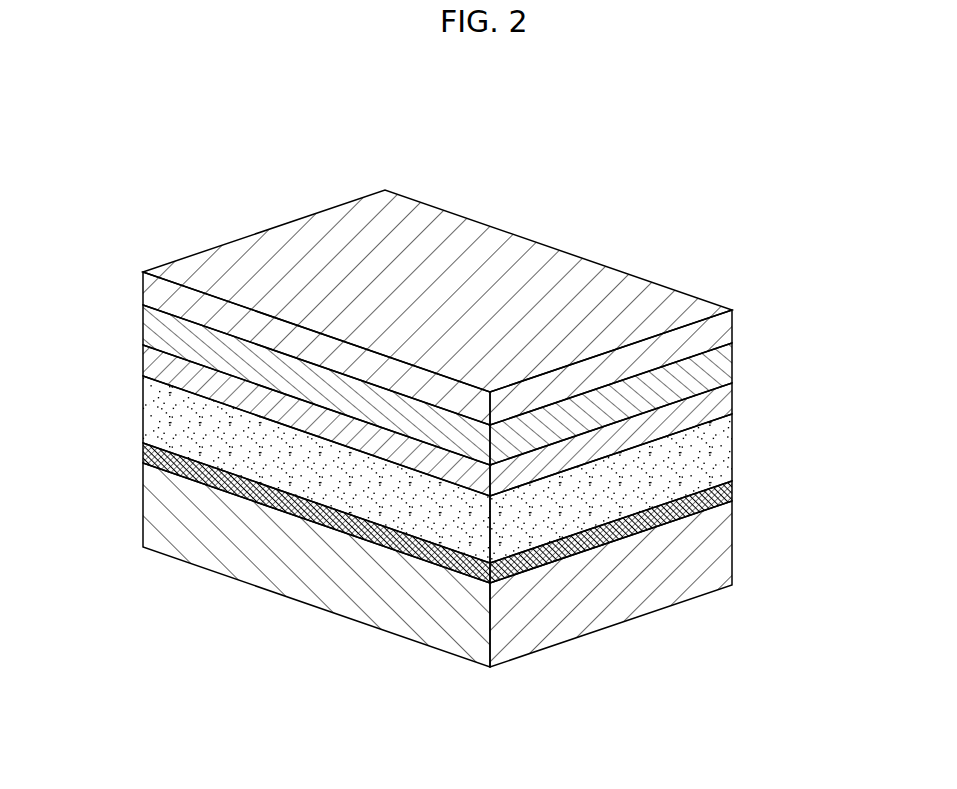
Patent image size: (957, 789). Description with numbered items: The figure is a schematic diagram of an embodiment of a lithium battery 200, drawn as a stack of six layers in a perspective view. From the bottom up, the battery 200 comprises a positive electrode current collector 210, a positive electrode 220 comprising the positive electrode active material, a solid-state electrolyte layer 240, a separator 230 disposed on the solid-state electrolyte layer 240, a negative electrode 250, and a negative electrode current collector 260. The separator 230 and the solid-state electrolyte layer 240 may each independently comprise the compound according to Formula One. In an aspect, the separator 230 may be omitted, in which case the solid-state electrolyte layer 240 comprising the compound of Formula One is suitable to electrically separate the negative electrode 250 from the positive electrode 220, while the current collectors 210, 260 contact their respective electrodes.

The battery 200 is at (461, 370).
The positive electrode current collector 210 is at (735, 572).
The positive electrode 220 is at (735, 490).
The separator 230 is at (735, 447).
The solid-state electrolyte layer 240 is at (735, 400).
The negative electrode 250 is at (735, 364).
The negative electrode current collector 260 is at (735, 310).